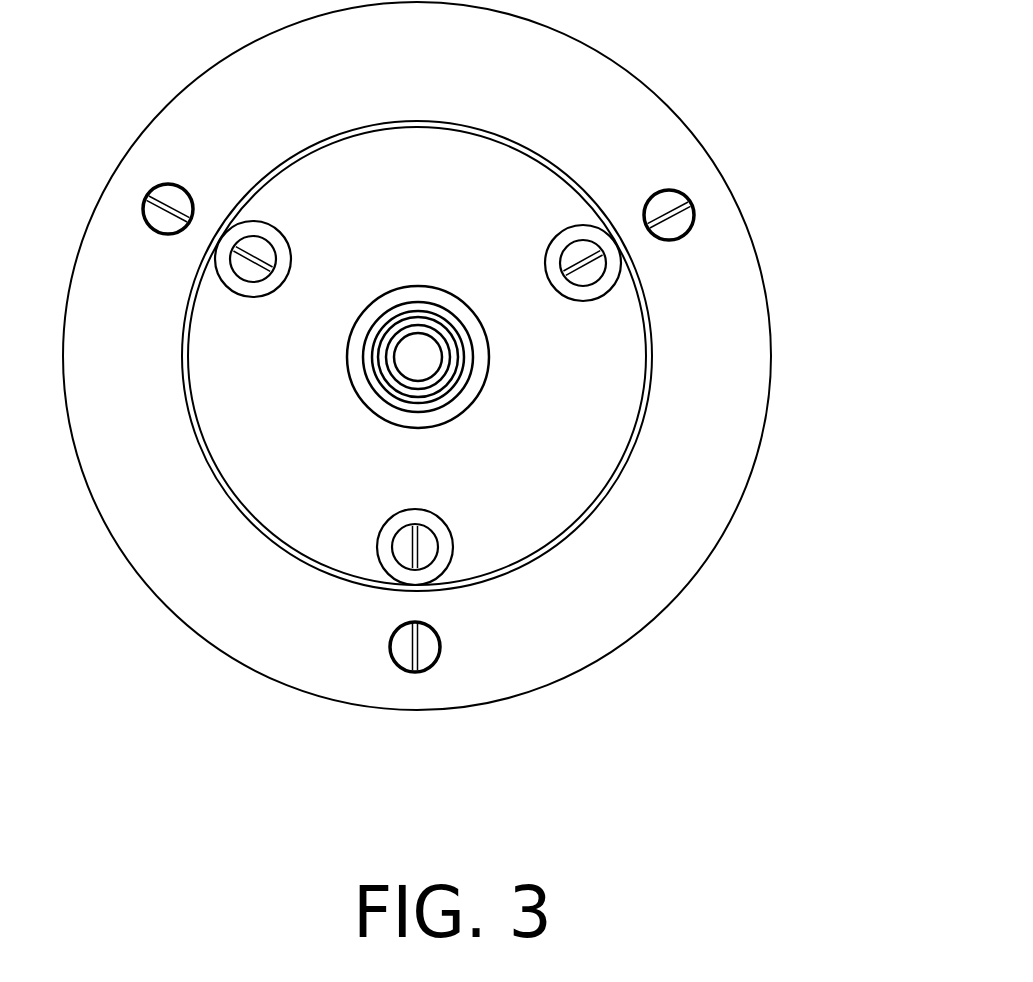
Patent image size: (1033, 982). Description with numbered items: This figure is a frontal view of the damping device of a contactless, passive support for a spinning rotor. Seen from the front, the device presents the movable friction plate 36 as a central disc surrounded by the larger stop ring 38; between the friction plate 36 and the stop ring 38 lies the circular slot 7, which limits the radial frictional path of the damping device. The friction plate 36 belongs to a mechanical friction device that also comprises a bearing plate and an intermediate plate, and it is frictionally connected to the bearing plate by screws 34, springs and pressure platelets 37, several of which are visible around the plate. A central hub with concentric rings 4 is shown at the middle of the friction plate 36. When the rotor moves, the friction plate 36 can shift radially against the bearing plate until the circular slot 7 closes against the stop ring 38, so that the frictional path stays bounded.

The shaft hub 4 is at (428, 380).
The circular slot 7 is at (183, 363).
The screws 34 is at (402, 553).
The friction plate 36 is at (595, 463).
The pressure platelets 37 is at (602, 222).
The stop ring 38 is at (742, 325).